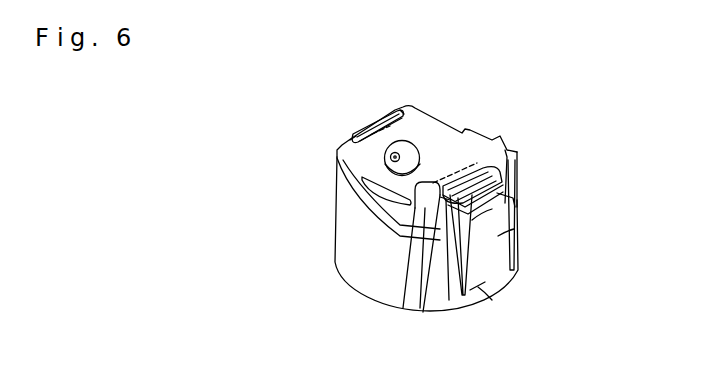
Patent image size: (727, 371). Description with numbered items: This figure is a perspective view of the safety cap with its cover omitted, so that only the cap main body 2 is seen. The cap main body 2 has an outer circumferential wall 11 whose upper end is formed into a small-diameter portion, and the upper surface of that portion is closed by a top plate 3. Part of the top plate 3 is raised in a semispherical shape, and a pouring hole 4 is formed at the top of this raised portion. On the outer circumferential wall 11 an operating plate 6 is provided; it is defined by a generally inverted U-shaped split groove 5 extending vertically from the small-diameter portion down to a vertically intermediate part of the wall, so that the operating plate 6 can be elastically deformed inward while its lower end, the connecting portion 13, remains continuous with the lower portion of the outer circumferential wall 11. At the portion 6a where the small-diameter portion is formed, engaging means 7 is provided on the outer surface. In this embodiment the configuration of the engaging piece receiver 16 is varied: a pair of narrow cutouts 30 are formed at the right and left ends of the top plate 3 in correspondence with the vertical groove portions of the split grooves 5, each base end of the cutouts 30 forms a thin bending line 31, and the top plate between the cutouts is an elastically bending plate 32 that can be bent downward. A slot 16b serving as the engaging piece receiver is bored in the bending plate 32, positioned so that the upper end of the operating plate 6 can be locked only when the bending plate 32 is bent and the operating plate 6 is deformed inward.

The cap main body 2 is at (543, 148).
The top plate 3 is at (422, 123).
The pouring hole 4 is at (391, 156).
The split groove 5 is at (472, 293).
The operating plate 6 is at (512, 230).
The portion at which the small-diameter portion is formed 6a is at (449, 300).
The engaging means 7 is at (508, 180).
The outer circumferential wall 11 is at (353, 247).
The connecting portion 13 is at (478, 287).
The engaging piece receiver 16 is at (383, 120).
The slot 16b is at (497, 165).
The cutout 30 is at (397, 112).
The bending line 31 is at (403, 308).
The elastically bending plate 32 is at (385, 113).